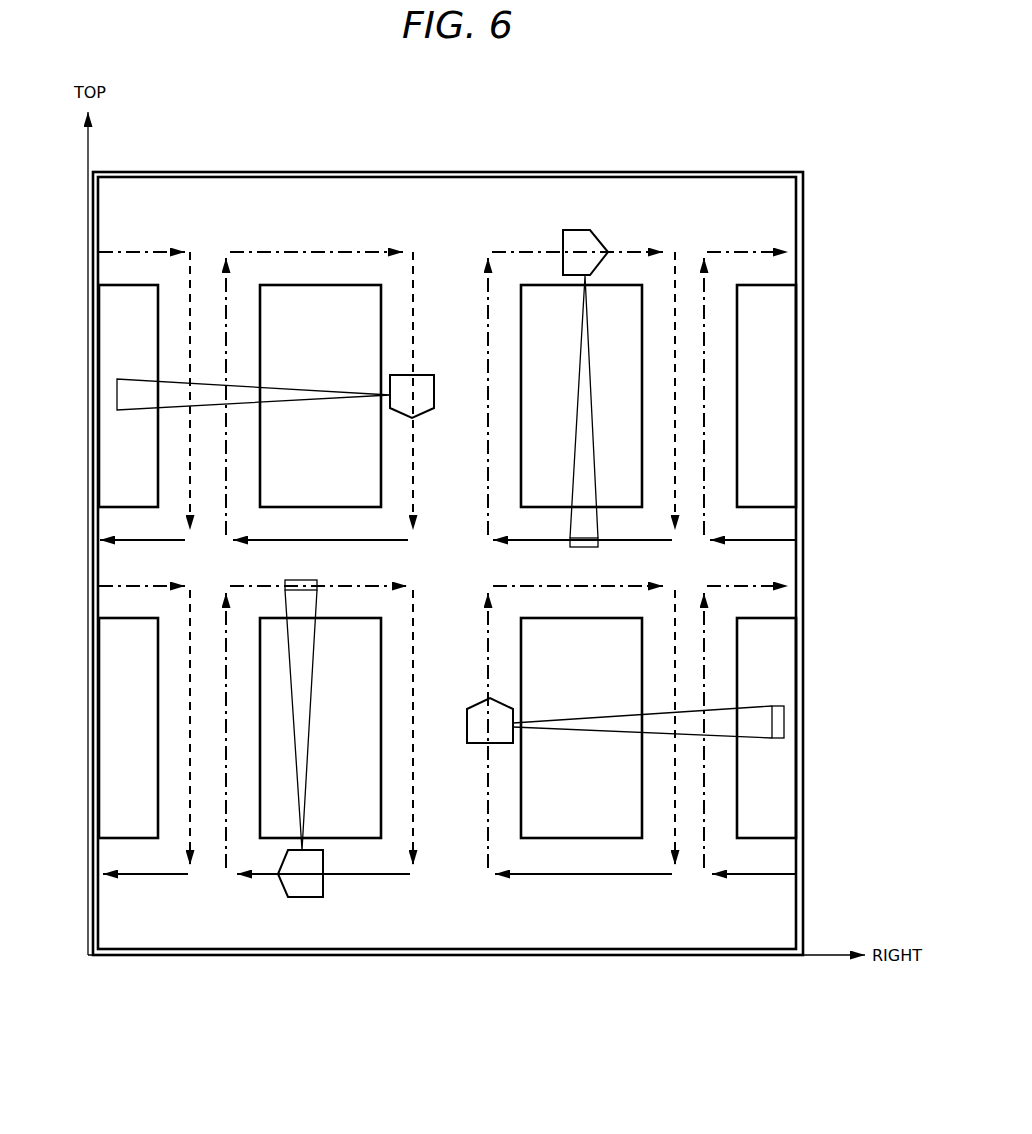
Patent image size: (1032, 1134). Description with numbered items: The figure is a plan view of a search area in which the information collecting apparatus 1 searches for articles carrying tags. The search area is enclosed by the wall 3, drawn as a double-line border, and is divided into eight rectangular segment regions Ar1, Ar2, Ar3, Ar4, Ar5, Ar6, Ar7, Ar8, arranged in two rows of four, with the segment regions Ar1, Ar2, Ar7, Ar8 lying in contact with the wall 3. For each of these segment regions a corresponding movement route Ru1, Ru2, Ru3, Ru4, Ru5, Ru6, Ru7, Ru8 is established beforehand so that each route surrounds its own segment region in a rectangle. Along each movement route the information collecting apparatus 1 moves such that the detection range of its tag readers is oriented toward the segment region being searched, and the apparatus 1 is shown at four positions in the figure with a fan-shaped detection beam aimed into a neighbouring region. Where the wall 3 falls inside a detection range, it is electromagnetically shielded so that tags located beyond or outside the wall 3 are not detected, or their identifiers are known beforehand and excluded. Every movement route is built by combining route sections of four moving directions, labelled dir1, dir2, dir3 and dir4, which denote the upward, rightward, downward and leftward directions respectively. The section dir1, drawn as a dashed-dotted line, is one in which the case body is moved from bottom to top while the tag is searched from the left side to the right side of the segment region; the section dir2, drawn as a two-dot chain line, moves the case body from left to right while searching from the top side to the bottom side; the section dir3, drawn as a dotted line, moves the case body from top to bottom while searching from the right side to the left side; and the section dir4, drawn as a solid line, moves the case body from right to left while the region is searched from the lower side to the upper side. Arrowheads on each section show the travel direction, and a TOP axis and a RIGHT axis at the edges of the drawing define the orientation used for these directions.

The information collecting apparatus 1 is at (590, 230).
The wall 3 is at (803, 197).
The segment region Ar1 is at (780, 652).
The segment region Ar2 is at (780, 355).
The segment region Ar3 is at (620, 302).
The segment region Ar4 is at (565, 823).
The segment region Ar5 is at (343, 823).
The segment region Ar6 is at (290, 302).
The segment region Ar7 is at (115, 337).
The segment region Ar8 is at (115, 719).
The movement route Ru1 is at (767, 876).
The movement route Ru2 is at (770, 541).
The movement route Ru3 is at (548, 247).
The movement route Ru4 is at (628, 876).
The movement route Ru5 is at (368, 876).
The movement route Ru6 is at (335, 247).
The movement route Ru7 is at (138, 247).
The movement route Ru8 is at (138, 876).
The upward route section dir1 is at (484, 322).
The rightward route section dir2 is at (505, 255).
The downward route section dir3 is at (414, 474).
The leftward route section dir4 is at (387, 541).